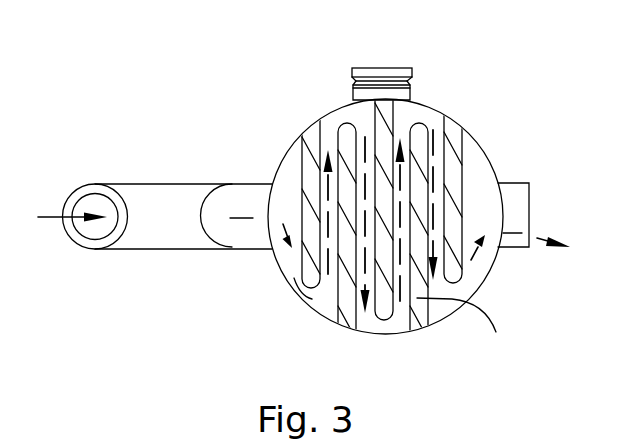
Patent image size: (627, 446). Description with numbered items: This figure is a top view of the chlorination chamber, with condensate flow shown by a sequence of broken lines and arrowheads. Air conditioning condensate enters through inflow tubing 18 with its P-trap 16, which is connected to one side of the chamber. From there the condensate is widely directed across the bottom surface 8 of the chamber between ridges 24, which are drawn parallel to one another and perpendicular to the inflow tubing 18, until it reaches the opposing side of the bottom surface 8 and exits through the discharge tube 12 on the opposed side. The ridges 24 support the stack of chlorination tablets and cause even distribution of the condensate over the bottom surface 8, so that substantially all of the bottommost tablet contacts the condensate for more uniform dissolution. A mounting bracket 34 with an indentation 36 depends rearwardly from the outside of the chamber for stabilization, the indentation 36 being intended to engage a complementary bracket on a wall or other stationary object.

The bottom surface 8 is at (328, 298).
The discharge tube 12 is at (517, 215).
The P-trap 16 is at (173, 238).
The inflow tubing 18 is at (247, 198).
The ridges 24 is at (457, 278).
The mounting bracket 34 is at (383, 66).
The indentation 36 is at (408, 78).